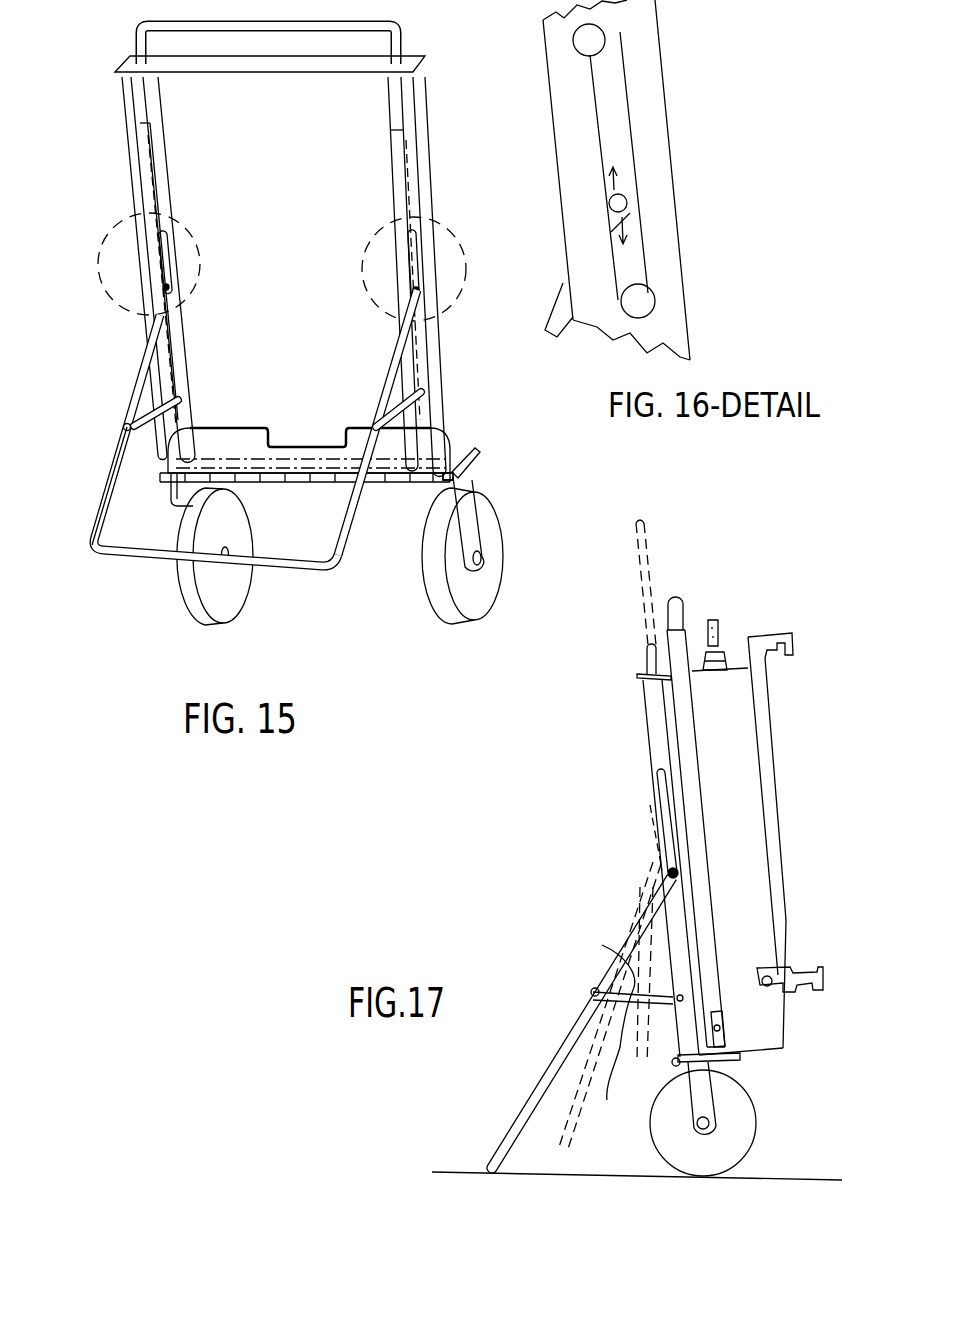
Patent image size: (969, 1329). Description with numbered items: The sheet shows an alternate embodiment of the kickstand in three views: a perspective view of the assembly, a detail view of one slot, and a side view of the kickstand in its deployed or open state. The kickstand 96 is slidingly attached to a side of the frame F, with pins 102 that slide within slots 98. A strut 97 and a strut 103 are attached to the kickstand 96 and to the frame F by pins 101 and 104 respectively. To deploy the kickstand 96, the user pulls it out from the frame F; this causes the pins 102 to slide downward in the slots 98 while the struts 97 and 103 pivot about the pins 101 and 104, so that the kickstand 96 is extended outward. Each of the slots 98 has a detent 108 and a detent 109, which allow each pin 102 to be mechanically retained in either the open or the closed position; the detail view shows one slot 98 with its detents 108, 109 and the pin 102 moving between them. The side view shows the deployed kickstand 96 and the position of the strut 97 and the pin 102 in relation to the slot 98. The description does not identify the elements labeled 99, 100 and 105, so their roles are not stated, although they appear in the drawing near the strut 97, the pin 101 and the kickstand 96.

In FIG. 15, the kickstand 96 is at (104, 512).
In FIG. 17, the kickstand 96 is at (553, 1060).
In FIG. 15, the strut 97 is at (423, 422).
In FIG. 17, the strut 97 is at (610, 978).
In FIG. 15, the slot 98 is at (178, 247).
In FIG. 16, the slot 98 is at (632, 137).
In FIG. 17, the slot 98 is at (653, 803).
In FIG. 17, the cord 99 is at (597, 1012).
In FIG. 15, the cross bar 100 is at (378, 427).
In FIG. 17, the cross bar 100 is at (592, 995).
In FIG. 15, the pin 101 is at (480, 434).
In FIG. 17, the pin 101 is at (688, 995).
In FIG. 15, the pin 102 is at (178, 285).
In FIG. 17, the pin 102 is at (678, 873).
In FIG. 15, the strut 103 is at (87, 486).
In FIG. 15, the pin 104 is at (184, 397).
In FIG. 15, the pivot pin 105 is at (128, 427).
In FIG. 16, the detent 108 is at (597, 33).
In FIG. 16, the detent 109 is at (648, 294).
In FIG. 15, the frame F is at (463, 431).